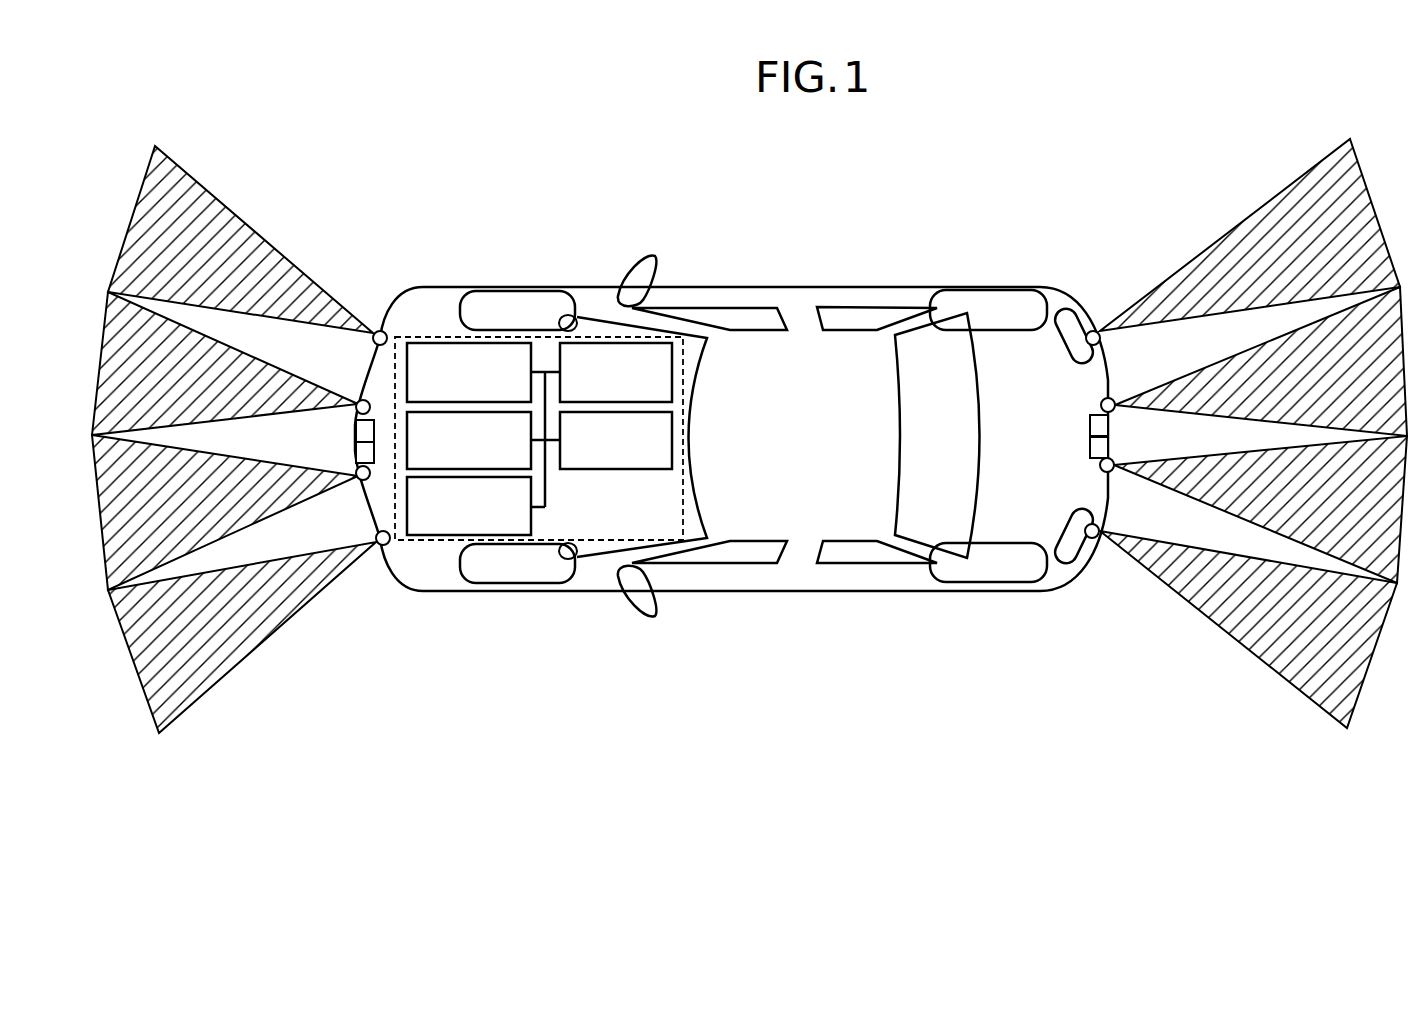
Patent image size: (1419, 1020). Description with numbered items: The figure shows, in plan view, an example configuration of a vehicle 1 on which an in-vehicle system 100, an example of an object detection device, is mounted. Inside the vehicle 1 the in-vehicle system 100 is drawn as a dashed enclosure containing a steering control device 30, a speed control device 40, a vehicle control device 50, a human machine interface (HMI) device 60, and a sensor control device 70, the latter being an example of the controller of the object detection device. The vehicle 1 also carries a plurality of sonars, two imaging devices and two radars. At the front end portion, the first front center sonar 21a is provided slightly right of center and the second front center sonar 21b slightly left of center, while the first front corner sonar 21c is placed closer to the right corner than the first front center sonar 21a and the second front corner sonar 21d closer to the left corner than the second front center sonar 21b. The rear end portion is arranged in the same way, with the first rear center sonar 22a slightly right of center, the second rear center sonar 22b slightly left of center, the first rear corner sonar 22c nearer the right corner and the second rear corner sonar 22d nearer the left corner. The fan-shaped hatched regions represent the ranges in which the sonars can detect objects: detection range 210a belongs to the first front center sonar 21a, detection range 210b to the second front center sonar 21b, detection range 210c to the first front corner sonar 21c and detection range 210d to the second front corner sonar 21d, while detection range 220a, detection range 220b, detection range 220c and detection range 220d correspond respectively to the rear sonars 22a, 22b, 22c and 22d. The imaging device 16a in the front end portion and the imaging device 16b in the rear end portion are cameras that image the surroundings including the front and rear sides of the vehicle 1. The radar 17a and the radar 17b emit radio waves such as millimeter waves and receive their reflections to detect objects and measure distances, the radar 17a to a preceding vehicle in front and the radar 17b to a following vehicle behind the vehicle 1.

The vehicle 1 is at (803, 285).
The imaging device 16a is at (355, 430).
The imaging device 16b is at (1109, 428).
The radar 17a is at (355, 452).
The radar 17b is at (1109, 450).
The first front center sonar 21a is at (358, 401).
The second front center sonar 21b is at (358, 479).
The first front corner sonar 21c is at (378, 331).
The second front corner sonar 21d is at (381, 546).
The first rear center sonar 22a is at (1113, 399).
The second rear center sonar 22b is at (1113, 471).
The first rear corner sonar 22c is at (1094, 331).
The second rear corner sonar 22d is at (1097, 539).
The steering control device 30 is at (468, 343).
The speed control device 40 is at (406, 437).
The vehicle control device 50 is at (435, 535).
The human machine interface (HMI) device 60 is at (608, 343).
The sensor control device 70 is at (627, 469).
The in-vehicle system 100 is at (687, 337).
The detection range 210a is at (93, 290).
The detection range 210b is at (95, 560).
The detection range 210c is at (128, 232).
The detection range 210d is at (140, 708).
The detection range 220a is at (1404, 275).
The detection range 220b is at (1405, 560).
The detection range 220c is at (1375, 230).
The detection range 220d is at (1357, 705).